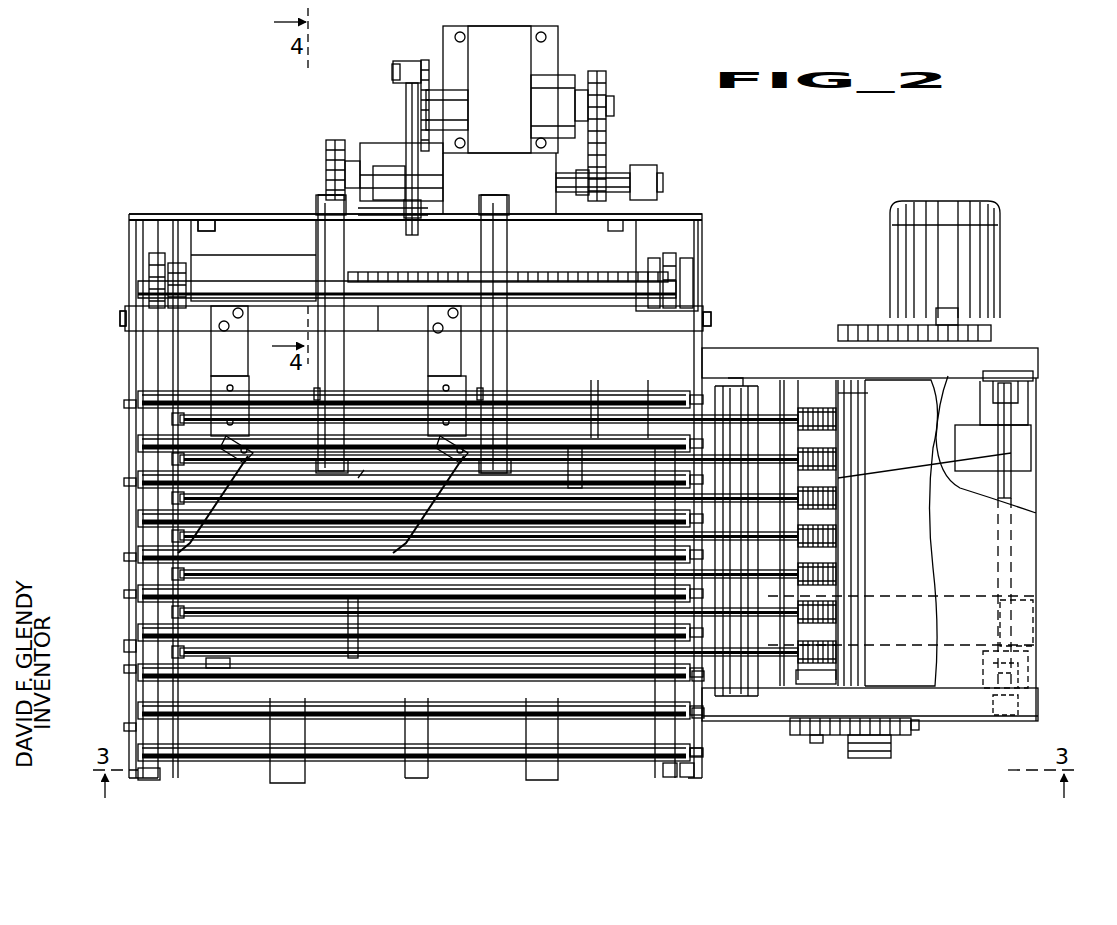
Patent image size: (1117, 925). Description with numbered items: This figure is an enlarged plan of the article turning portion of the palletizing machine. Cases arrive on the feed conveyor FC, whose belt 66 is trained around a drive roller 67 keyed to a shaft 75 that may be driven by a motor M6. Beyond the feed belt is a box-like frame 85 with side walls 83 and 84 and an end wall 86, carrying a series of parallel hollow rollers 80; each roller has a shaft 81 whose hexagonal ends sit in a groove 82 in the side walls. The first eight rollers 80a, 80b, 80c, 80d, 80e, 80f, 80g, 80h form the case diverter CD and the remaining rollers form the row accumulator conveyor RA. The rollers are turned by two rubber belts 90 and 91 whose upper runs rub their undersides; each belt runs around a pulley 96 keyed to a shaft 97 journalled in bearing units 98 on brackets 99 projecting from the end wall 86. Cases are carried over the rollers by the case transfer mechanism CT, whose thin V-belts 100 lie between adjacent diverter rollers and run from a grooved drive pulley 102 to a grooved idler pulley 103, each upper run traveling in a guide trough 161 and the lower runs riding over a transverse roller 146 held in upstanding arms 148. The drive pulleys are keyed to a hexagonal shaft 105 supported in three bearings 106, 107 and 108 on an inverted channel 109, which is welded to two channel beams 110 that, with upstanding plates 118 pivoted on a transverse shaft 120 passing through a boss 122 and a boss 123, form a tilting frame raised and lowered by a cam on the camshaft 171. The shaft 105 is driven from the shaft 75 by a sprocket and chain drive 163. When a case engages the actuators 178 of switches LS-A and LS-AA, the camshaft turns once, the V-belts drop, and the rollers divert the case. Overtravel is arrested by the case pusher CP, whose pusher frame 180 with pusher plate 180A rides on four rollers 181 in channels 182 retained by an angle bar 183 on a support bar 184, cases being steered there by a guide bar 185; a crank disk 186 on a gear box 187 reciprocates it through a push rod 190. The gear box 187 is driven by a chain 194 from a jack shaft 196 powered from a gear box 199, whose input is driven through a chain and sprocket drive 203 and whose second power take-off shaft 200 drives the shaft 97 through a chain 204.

The belt 66 is at (901, 533).
The drive roller 67 is at (866, 348).
The shaft 75 is at (862, 318).
The rollers 80 is at (258, 668).
The roller 80a is at (135, 390).
The roller 80b is at (132, 436).
The roller 80c is at (135, 470).
The roller 80d is at (140, 510).
The roller 80e is at (135, 545).
The roller 80f is at (135, 585).
The roller 80g is at (395, 640).
The roller 80h is at (487, 665).
The shaft 81 is at (118, 474).
The groove 82 is at (116, 400).
The side wall 83 is at (118, 718).
The side wall 84 is at (680, 770).
The box-like frame 85 is at (118, 210).
The end wall 86 is at (137, 206).
The rubber belt 90 is at (150, 294).
The rubber belt 91 is at (700, 328).
The pulley 96 is at (141, 258).
The shaft 97 is at (252, 292).
The bearing units 98 is at (160, 277).
The brackets 99 is at (185, 234).
The V-belts 100 is at (830, 425).
The grooved drive pulley 102 is at (828, 458).
The grooved idler pulley 103 is at (205, 660).
The hexagonal shaft 105 is at (830, 395).
The bearing 106 is at (808, 378).
The bearing 107 is at (830, 552).
The bearing 108 is at (803, 676).
The inverted channel 109 is at (830, 666).
The channel beams 110 is at (1015, 428).
The upstanding plates 118 is at (1005, 370).
The transverse shaft 120 is at (1000, 446).
The boss 122 is at (1010, 388).
The boss 123 is at (1012, 697).
The transverse roller 146 is at (735, 382).
The upstanding arms 148 is at (712, 378).
The guide trough 161 is at (590, 400).
The sprocket and chain drive 163 is at (905, 722).
The camshaft 171 is at (398, 760).
The actuators 178 is at (206, 510).
The pusher frame 180 is at (482, 217).
The pusher plate 180A is at (360, 463).
The rollers 181 is at (333, 262).
The channels 182 is at (332, 244).
The angle bar 183 is at (332, 223).
The support bar 184 is at (405, 321).
The guide bar 185 is at (572, 470).
The crank disk 186 is at (430, 62).
The gear box 187 is at (505, 74).
The push rod 190 is at (400, 100).
The chain 194 is at (600, 128).
The jack shaft 196 is at (615, 170).
The gear box 199 is at (392, 140).
The second power take-off shaft 200 is at (347, 170).
The chain and sprocket drive 203 is at (562, 268).
The chain 204 is at (318, 152).
The case pusher CP is at (306, 212).
The case diverter conveyor CD is at (114, 638).
The case transfer mechanism CT is at (647, 412).
The feed conveyor FC is at (925, 380).
The switch LS-A is at (420, 375).
The switch LS-AA is at (218, 372).
The motor M6 is at (938, 200).
The row accumulator conveyor RA is at (690, 748).